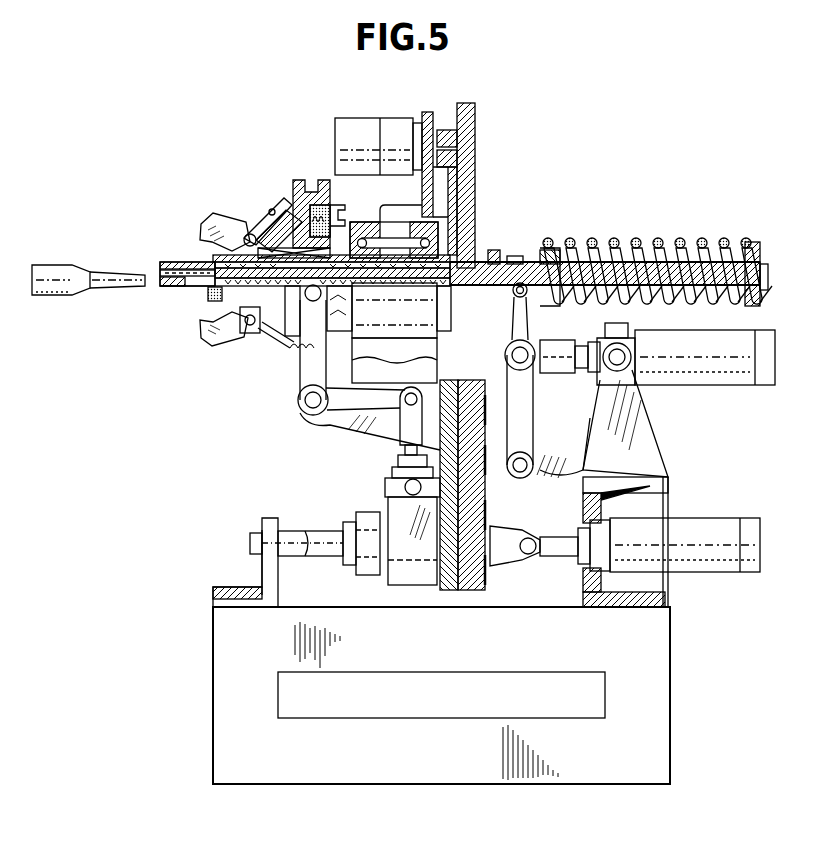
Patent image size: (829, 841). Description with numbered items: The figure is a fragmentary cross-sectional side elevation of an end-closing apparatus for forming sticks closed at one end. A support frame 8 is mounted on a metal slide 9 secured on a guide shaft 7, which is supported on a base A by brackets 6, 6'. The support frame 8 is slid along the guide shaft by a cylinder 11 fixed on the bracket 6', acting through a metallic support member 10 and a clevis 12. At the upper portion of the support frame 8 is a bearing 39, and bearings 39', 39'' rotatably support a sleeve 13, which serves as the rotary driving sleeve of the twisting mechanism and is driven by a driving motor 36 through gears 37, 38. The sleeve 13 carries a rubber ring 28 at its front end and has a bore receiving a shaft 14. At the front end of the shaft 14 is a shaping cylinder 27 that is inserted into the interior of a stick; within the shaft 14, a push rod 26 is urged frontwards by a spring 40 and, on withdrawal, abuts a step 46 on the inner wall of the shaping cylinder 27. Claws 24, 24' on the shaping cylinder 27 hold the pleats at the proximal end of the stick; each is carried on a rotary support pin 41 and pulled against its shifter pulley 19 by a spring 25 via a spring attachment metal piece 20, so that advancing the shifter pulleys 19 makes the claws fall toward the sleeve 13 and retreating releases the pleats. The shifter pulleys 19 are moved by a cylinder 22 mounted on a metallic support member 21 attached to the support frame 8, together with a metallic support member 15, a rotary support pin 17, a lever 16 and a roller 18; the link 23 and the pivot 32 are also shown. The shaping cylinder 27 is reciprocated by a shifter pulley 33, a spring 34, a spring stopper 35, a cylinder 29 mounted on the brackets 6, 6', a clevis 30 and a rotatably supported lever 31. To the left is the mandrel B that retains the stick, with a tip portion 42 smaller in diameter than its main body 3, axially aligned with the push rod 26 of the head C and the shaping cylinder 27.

The main body 3 is at (45, 265).
The mandrel B is at (40, 295).
The tip portion 42 is at (110, 290).
The shaping cylinder 27 is at (165, 268).
The step 46 is at (185, 274).
The push rod 26 is at (165, 287).
The rubber ring 28 is at (210, 296).
The head C is at (180, 240).
The sleeve 13 is at (225, 258).
The shaft 14 is at (493, 262).
The claw 24 is at (223, 217).
The claw 24' is at (218, 343).
The rotary support pin 41 is at (250, 228).
The spring 25 is at (293, 234).
The shifter pulley 19 is at (306, 180).
The spring attachment metal piece 20 is at (342, 215).
The roller 18 is at (265, 334).
The driving motor 36 is at (355, 118).
The gear 37 is at (476, 110).
The gear 38 is at (477, 218).
The bearing 39 is at (403, 218).
The bearing 39' is at (375, 199).
The bearing 39'' is at (403, 191).
The spring 40 is at (368, 333).
The shifter pulley 33 is at (545, 249).
The spring 34 is at (632, 231).
The spring stopper 35 is at (750, 244).
The pivot pin 32 is at (515, 297).
The lever 31 is at (528, 427).
The clevis 30 is at (555, 374).
The cylinder 29 is at (710, 386).
The rotary support pin 17 is at (298, 400).
The lever 16 is at (325, 412).
The metallic support member 15 is at (345, 432).
The piston rod 23 is at (405, 420).
The support frame 8 is at (368, 487).
The cylinder 22 is at (410, 586).
The metallic support member 21 is at (470, 497).
The guide shaft 7 is at (300, 540).
The metal slide 9 is at (345, 565).
The metallic support member 10 is at (505, 556).
The clevis 12 is at (550, 558).
The cylinder 11 is at (705, 525).
The bracket 6 is at (229, 562).
The bracket 6' is at (646, 546).
The base A is at (222, 630).